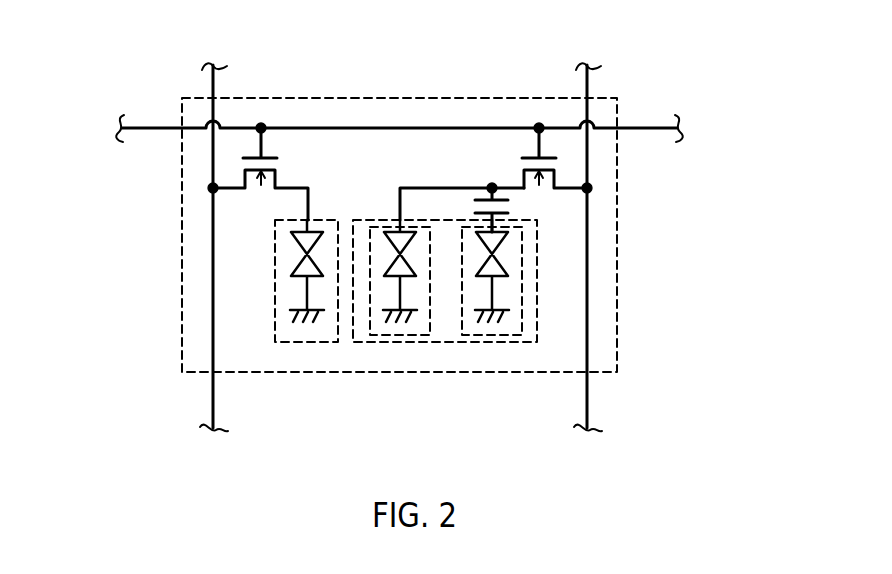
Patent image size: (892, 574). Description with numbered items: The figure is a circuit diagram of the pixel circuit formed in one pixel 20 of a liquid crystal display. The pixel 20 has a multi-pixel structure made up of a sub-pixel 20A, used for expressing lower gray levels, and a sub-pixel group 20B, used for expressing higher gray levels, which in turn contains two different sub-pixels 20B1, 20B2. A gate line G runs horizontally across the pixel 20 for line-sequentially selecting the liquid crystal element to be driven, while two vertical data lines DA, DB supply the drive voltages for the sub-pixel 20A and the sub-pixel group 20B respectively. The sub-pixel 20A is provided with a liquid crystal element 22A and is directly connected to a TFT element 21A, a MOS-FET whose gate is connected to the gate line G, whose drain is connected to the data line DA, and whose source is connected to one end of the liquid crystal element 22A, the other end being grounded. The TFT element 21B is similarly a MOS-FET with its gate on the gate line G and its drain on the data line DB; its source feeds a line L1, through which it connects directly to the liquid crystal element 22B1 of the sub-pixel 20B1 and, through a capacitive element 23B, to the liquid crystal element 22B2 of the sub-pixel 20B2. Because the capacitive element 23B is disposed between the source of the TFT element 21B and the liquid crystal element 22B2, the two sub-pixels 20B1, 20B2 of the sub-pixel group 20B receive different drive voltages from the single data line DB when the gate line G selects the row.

The gate line G is at (660, 128).
The data line DA is at (207, 85).
The data line DB is at (590, 87).
The pixel 20 is at (304, 98).
The sub-pixel 20A is at (275, 272).
The sub-pixel group 20B is at (537, 240).
The sub-pixel 20B1 is at (377, 225).
The sub-pixel 20B2 is at (522, 268).
The TFT element 21A is at (217, 173).
The TFT element 21B is at (583, 173).
The line L1 is at (476, 186).
The capacitive element 23B is at (525, 211).
The liquid crystal element 22A is at (325, 293).
The liquid crystal element 22B1 is at (417, 293).
The liquid crystal element 22B2 is at (508, 292).